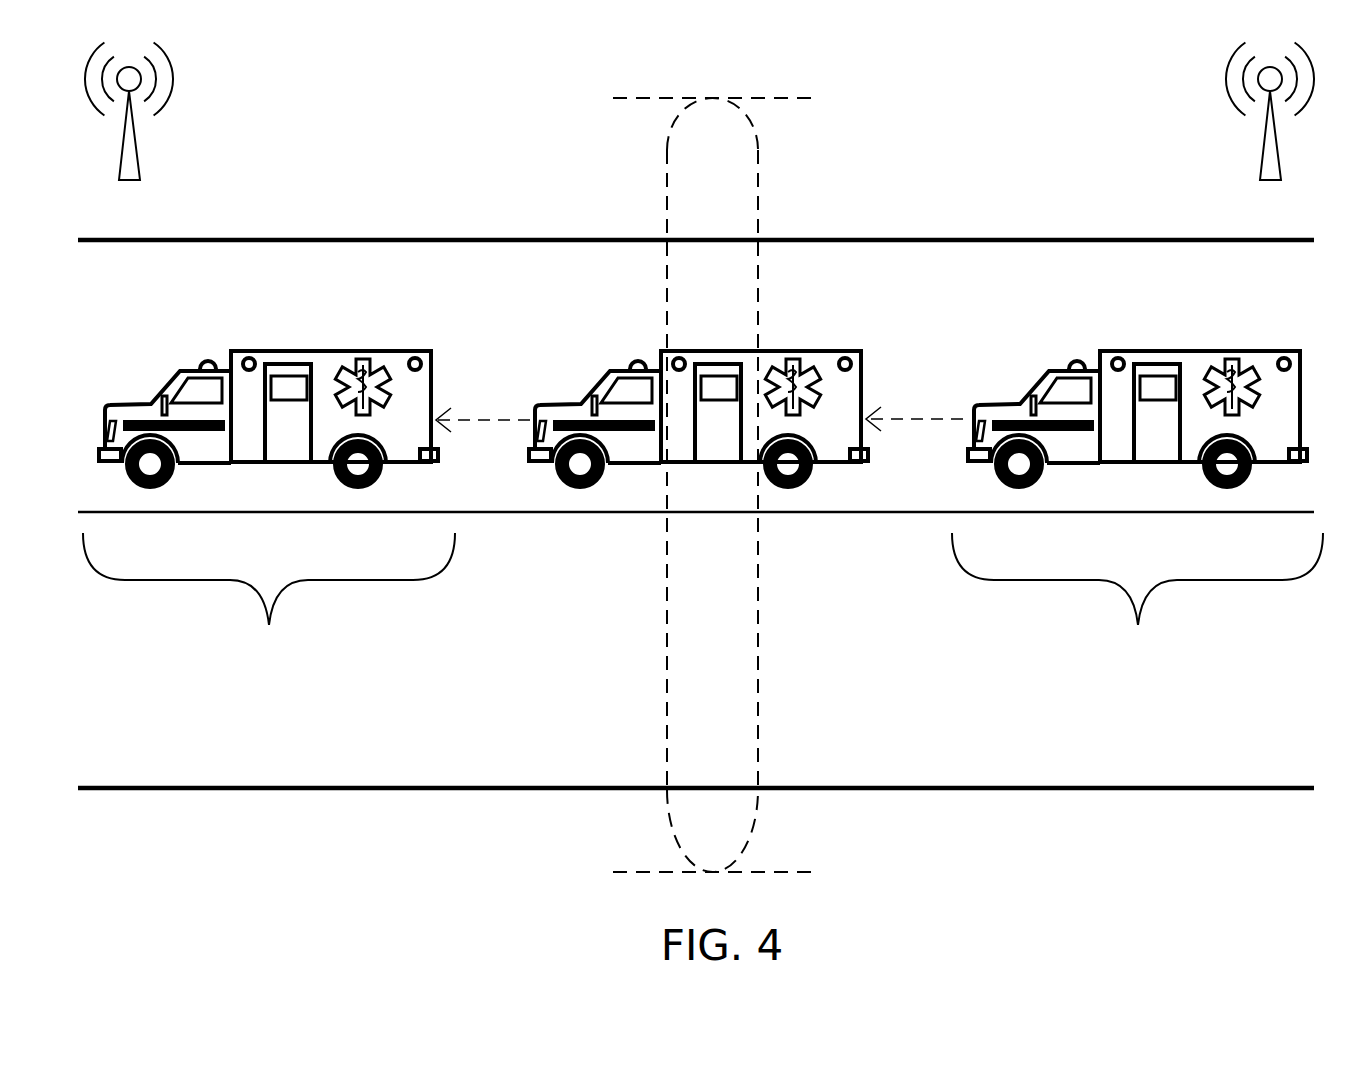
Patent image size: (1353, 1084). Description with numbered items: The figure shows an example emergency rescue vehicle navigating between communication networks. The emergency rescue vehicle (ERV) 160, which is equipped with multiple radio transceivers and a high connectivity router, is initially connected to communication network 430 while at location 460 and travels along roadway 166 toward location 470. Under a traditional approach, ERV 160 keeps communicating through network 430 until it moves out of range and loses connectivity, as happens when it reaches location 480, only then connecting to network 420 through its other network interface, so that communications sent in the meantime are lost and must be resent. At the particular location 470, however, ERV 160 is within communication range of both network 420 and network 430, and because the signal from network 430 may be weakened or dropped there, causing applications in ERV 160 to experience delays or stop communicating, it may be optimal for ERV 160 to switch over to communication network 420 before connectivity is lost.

The communication network 420 is at (129, 129).
The communication network 430 is at (1270, 129).
The location 470 is at (713, 485).
The emergency rescue vehicle 160 is at (832, 350).
The roadway 166 is at (914, 450).
The location 480 is at (269, 505).
The location 460 is at (1137, 505).